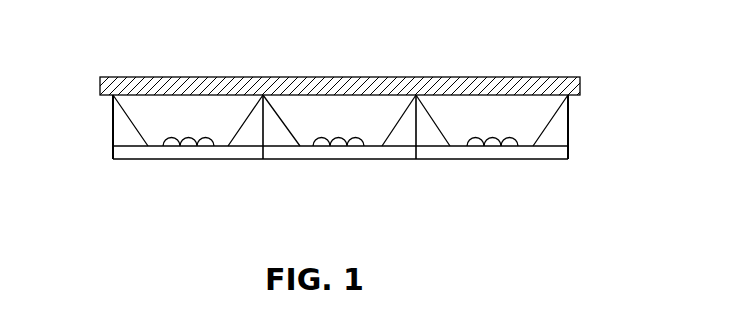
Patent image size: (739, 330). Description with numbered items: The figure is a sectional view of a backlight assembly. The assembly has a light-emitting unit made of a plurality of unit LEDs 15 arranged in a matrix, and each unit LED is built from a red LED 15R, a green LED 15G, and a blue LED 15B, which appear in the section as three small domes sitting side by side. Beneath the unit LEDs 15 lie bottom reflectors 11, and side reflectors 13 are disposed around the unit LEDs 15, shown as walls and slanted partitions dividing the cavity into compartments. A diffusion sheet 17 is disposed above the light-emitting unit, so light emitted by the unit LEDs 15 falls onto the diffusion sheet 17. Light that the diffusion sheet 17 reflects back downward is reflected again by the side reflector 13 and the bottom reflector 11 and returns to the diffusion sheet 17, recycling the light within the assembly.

The bottom reflector 11 is at (189, 152).
The side reflector 13 is at (117, 126).
The unit LED 15 is at (355, 192).
The red LED 15R is at (474, 148).
The green LED 15G is at (491, 148).
The blue LED 15B is at (524, 173).
The diffusion sheet 17 is at (339, 85).